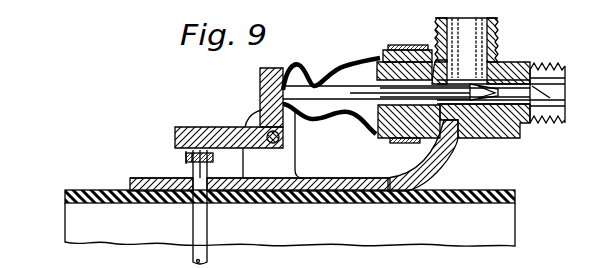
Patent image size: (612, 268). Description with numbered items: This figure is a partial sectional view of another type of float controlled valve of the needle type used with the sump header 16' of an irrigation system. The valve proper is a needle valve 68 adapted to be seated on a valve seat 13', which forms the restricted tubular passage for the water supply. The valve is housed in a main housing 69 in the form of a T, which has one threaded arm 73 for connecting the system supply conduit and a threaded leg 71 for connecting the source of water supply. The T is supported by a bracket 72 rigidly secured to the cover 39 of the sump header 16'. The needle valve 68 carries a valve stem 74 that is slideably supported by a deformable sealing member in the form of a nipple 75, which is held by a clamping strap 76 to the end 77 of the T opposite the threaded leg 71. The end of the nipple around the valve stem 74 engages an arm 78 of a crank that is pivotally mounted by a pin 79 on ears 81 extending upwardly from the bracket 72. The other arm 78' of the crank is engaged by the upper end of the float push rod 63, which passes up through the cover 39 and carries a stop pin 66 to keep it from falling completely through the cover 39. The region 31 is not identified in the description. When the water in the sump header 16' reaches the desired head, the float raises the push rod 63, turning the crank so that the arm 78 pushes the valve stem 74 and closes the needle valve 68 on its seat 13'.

The valve seat 13' is at (563, 57).
The sump header 16' is at (290, 235).
The chamber 31 is at (365, 175).
The cover 39 is at (75, 192).
The push rod 63 is at (198, 222).
The stop pin 66 is at (186, 158).
The needle valve 68 is at (474, 97).
The main housing 69 is at (497, 61).
The threaded leg 71 is at (545, 126).
The bracket 72 is at (425, 167).
The threaded arm 73 is at (494, 26).
The valve stem 74 is at (368, 93).
The nipple 75 is at (366, 90).
The clamping strap 76 is at (415, 48).
The end of the T 77 is at (365, 68).
The crank arm 78 is at (252, 97).
The other crank arm 78' is at (229, 123).
The pin 79 is at (283, 150).
The ears 81 is at (296, 161).